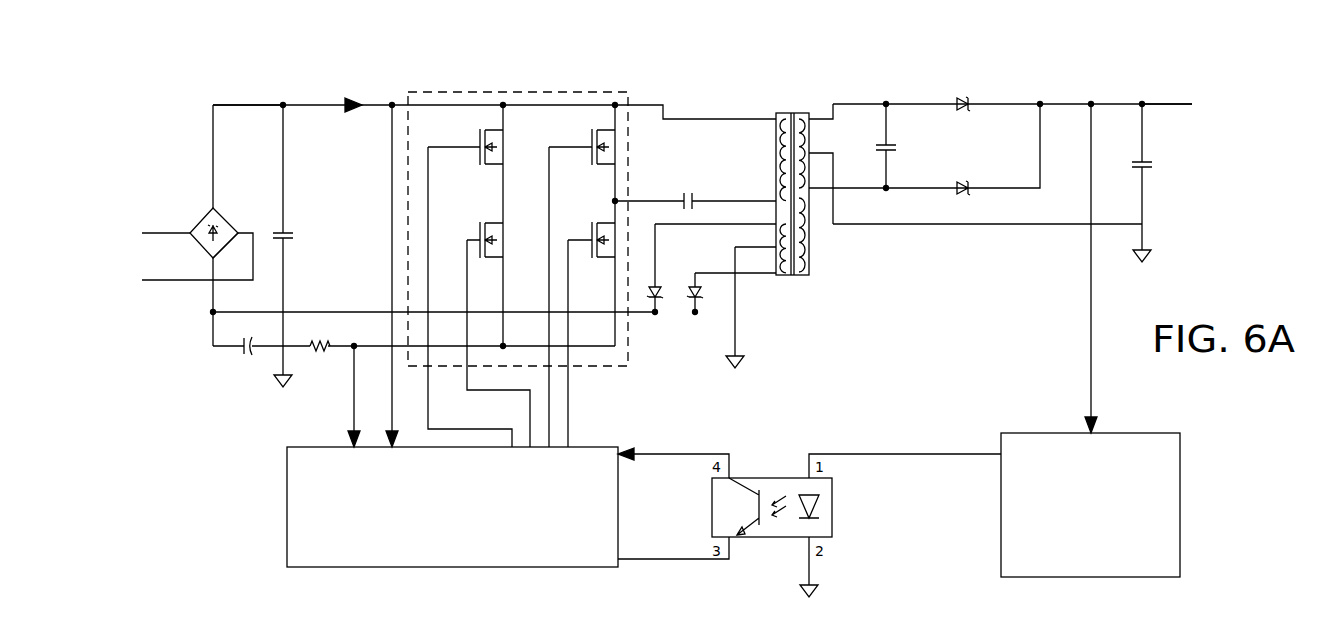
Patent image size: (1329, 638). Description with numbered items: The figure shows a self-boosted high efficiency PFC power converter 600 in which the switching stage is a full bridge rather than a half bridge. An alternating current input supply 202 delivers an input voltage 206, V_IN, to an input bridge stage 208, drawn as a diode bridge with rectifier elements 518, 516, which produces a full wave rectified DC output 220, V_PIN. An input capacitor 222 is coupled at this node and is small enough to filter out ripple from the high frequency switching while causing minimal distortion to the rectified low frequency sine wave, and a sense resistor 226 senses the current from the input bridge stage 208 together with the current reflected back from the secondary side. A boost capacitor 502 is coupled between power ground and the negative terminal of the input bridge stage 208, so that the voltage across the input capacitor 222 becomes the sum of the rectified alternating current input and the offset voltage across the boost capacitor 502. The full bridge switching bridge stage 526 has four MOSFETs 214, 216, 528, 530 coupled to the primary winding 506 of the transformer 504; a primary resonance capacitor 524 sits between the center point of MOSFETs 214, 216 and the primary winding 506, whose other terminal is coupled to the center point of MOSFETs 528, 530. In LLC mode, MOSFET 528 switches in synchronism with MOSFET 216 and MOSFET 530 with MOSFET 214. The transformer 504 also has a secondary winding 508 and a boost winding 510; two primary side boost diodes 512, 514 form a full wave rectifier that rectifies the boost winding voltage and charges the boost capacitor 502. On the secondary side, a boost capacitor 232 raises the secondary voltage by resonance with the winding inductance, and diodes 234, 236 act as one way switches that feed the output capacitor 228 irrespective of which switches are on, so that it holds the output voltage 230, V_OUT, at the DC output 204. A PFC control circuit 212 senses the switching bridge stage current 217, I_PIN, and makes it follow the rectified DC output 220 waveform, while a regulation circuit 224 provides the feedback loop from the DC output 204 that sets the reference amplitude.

The power supply 600 is at (163, 131).
The full wave rectified DC output 220 is at (228, 91).
The switching bridge stage current 217 is at (312, 90).
The input voltage 206 is at (153, 203).
The AC input 202 is at (162, 267).
The input bridge stage 208 is at (227, 228).
The rectifier diode 518 is at (214, 207).
The rectifier diode 516 is at (214, 258).
The input capacitor 222 is at (289, 233).
The boost capacitor 502 is at (247, 341).
The sense resistor 226 is at (320, 341).
The switching bridge stage 526 is at (621, 91).
The MOSFET 528 is at (479, 132).
The MOSFET 530 is at (479, 226).
The MOSFET 214 is at (592, 132).
The MOSFET 216 is at (592, 226).
The primary resonance capacitor 524 is at (693, 197).
The transformer 504 is at (770, 194).
The primary winding 506 is at (782, 149).
The secondary winding 508 is at (806, 242).
The boost winding 510 is at (783, 276).
The primary side boost diode 512 is at (657, 283).
The primary side boost diode 514 is at (700, 298).
The diode 234 is at (965, 99).
The diode 236 is at (965, 184).
The boost capacitor 232 is at (892, 143).
The output capacitor 228 is at (1138, 161).
The output voltage 230 is at (1203, 101).
The DC output 204 is at (1209, 154).
The PFC control circuit 212 is at (452, 507).
The regulation circuit 224 is at (1090, 340).